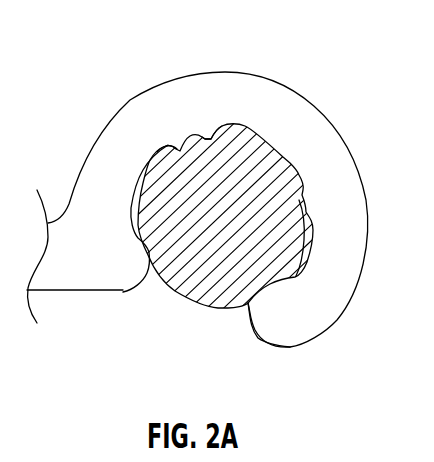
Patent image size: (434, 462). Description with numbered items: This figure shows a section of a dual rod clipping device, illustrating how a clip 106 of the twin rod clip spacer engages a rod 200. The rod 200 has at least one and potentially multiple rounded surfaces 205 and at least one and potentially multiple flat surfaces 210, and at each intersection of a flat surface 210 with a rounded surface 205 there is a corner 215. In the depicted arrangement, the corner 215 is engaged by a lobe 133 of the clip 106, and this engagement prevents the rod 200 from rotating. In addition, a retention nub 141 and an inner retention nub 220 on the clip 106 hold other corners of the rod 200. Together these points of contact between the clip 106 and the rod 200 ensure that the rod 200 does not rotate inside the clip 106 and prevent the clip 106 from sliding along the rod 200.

The clip 106 is at (321, 66).
The lobe 133 is at (177, 138).
The retention nub 141 is at (287, 311).
The rod 200 is at (210, 273).
The rounded surface 205 is at (226, 306).
The flat surface 210 is at (134, 198).
The corner 215 is at (207, 138).
The inner retention nub 220 is at (132, 264).